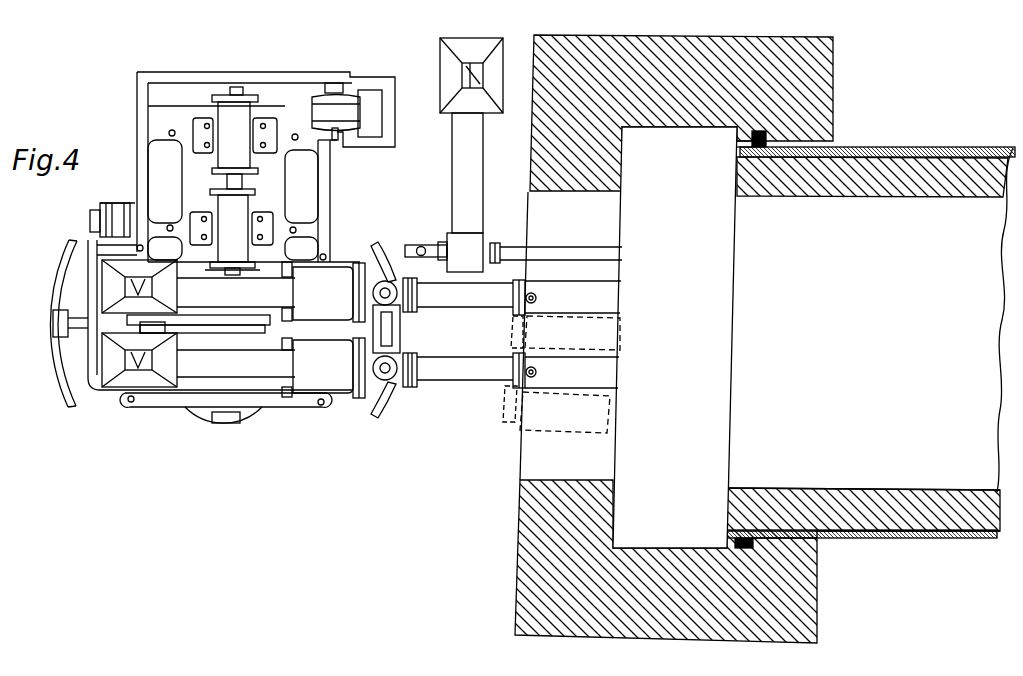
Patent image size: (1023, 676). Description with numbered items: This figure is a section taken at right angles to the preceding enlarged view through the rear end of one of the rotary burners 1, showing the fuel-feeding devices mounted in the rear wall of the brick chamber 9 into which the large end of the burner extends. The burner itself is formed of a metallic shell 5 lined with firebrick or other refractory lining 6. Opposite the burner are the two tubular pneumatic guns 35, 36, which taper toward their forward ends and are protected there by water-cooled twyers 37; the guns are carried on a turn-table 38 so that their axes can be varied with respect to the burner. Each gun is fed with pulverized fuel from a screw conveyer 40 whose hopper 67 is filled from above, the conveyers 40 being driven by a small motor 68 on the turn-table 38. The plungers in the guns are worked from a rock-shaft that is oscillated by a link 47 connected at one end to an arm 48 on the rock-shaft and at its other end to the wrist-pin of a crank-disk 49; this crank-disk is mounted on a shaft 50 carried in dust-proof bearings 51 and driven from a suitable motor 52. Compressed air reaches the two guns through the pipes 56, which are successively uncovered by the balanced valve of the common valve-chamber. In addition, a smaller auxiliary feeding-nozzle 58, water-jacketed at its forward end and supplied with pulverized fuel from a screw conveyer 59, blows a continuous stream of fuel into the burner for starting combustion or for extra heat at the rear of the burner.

The rotary burner 1 is at (945, 136).
The metallic shell 5 is at (917, 538).
The refractory lining 6 is at (922, 495).
The chamber 9 is at (675, 337).
The gun 35 is at (464, 370).
The gun 36 is at (464, 296).
The twyer 37 is at (562, 357).
The turn-table 38 is at (241, 250).
The screw conveyer 40 is at (271, 330).
The link 47 is at (202, 337).
The arm 48 is at (140, 326).
The crank-disk 49 is at (250, 320).
The shaft 50 is at (222, 273).
The dust-proof bearing 51 is at (233, 181).
The motor 52 is at (358, 112).
The pipe 56 is at (415, 308).
The feeding-nozzle 58 is at (556, 246).
The screw conveyer 59 is at (478, 181).
The hopper 67 is at (139, 323).
The motor 68 is at (112, 210).